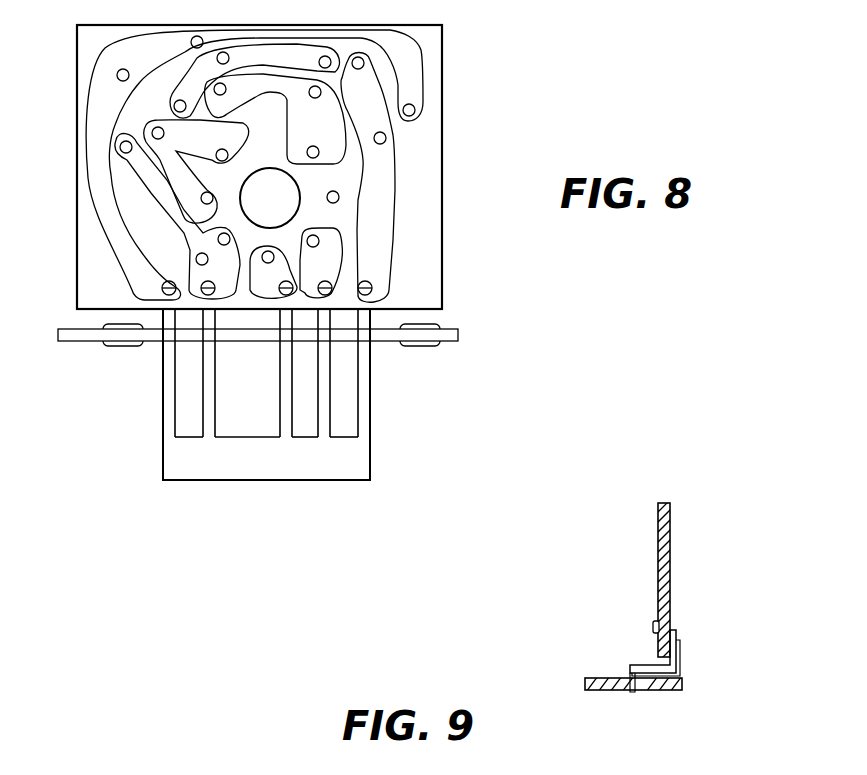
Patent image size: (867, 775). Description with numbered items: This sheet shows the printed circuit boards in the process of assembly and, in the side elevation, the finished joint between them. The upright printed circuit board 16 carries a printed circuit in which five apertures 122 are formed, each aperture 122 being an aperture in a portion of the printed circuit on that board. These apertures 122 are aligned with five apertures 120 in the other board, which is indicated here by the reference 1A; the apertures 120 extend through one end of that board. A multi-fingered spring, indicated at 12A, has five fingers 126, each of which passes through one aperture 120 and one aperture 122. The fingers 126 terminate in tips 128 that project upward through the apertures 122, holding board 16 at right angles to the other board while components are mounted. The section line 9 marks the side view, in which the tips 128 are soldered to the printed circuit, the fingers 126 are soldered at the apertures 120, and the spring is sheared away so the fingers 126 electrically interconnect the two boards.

In FIG. 8, the printed circuit board 16 is at (445, 258).
In FIG. 9, the printed circuit board 16 is at (672, 515).
In FIG. 8, the base plate 1A is at (459, 336).
In FIG. 9, the base plate 1A is at (685, 684).
In FIG. 8, the apertures 120 is at (165, 335).
In FIG. 9, the apertures 120 is at (636, 690).
In FIG. 8, the apertures 122 is at (165, 294).
In FIG. 9, the apertures 122 is at (674, 623).
In FIG. 8, the fingers 126 is at (203, 407).
In FIG. 9, the fingers 126 is at (680, 651).
In FIG. 8, the tips 128 is at (212, 284).
In FIG. 9, the tips 128 is at (654, 626).
In FIG. 8, the connector housing 12A is at (278, 460).
In FIG. 8, the section line 9- 9 is at (388, 207).